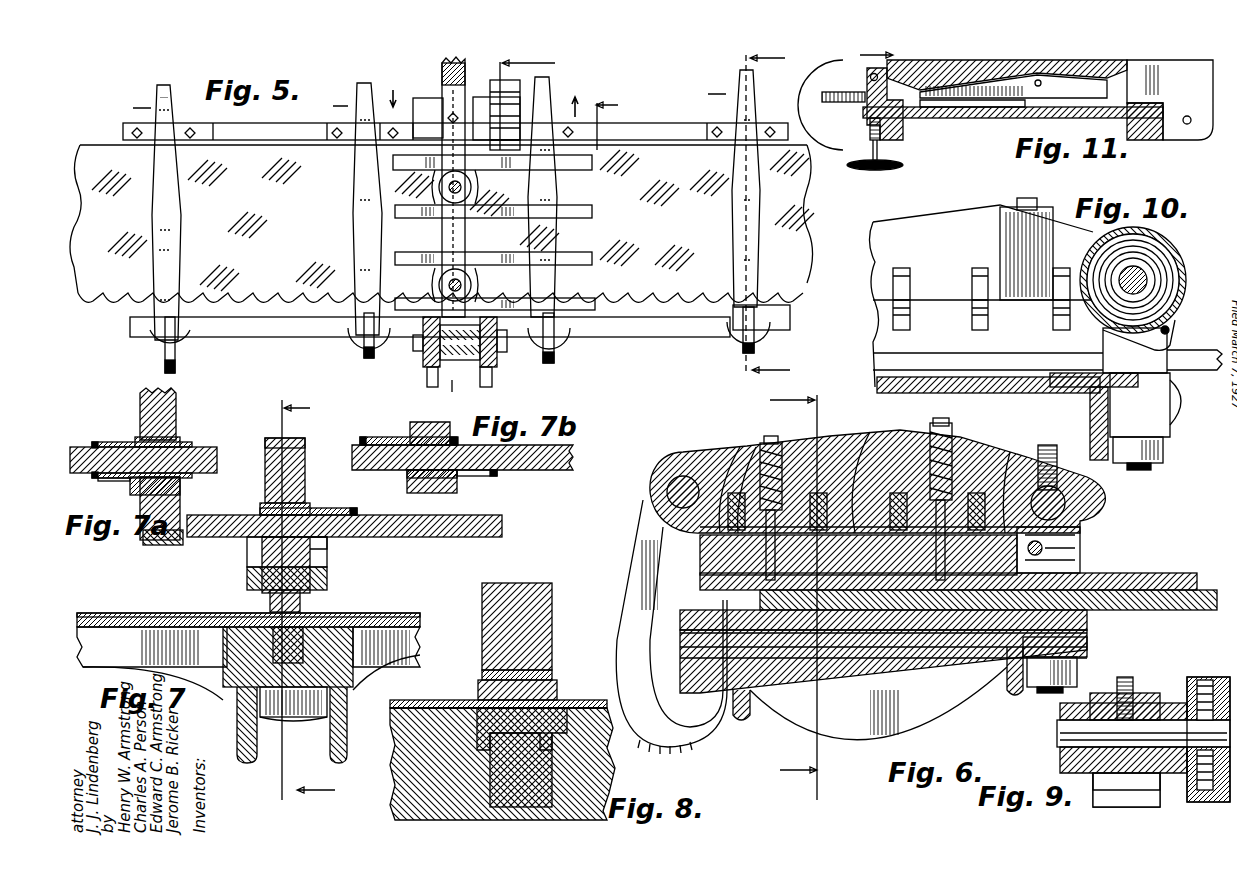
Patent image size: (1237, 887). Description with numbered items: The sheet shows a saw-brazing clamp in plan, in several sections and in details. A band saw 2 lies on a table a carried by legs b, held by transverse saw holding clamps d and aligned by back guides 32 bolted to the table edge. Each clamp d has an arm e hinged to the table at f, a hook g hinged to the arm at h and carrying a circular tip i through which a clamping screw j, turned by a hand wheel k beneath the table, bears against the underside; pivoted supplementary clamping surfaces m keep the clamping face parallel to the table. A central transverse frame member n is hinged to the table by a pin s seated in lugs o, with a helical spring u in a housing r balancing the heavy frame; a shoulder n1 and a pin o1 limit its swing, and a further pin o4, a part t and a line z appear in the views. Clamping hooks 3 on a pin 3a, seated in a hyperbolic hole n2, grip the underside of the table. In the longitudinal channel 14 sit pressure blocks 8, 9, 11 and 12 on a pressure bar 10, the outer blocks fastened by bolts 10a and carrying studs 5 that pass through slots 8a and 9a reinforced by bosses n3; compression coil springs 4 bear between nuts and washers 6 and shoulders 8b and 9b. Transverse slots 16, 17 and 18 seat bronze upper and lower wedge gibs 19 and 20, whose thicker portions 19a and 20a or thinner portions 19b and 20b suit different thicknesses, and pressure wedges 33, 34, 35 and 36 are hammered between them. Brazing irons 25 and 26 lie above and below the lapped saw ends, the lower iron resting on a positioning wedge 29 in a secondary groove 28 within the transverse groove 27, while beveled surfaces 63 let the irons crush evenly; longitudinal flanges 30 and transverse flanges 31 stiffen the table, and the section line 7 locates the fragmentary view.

In FIG. 5, the band saw 2 is at (442, 223).
In FIG. 7, the band saw 2 is at (410, 683).
In FIG. 6, the band saw 2 is at (925, 432).
In FIG. 5, the clamping hooks 3 is at (427, 385).
In FIG. 6, the clamping hooks 3 is at (700, 560).
In FIG. 5, the pin 3a is at (446, 348).
In FIG. 6, the pin 3a is at (678, 475).
In FIG. 6, the compression coil springs 4 is at (793, 470).
In FIG. 6, the studs 5 is at (762, 460).
In FIG. 5, the nuts and washers 6 is at (438, 187).
In FIG. 7, the nuts and washers 6 is at (317, 600).
In FIG. 6, the nuts and washers 6 is at (772, 440).
In FIG. 6, the section line 7 is at (787, 596).
In FIG. 6, the pressure block 8 is at (712, 575).
In FIG. 6, the slot 8a is at (756, 446).
In FIG. 6, the shoulder 8b is at (740, 446).
In FIG. 5, the pressure block 9 is at (165, 370).
In FIG. 6, the pressure block 9 is at (1045, 550).
In FIG. 6, the slot 9a is at (932, 440).
In FIG. 6, the shoulder 9b is at (912, 450).
In FIG. 5, the pressure bar 10 is at (571, 103).
In FIG. 7A, the pressure bar 10 is at (245, 580).
In FIG. 7, the pressure bar 10 is at (250, 580).
In FIG. 8, the pressure bar 10 is at (490, 660).
In FIG. 6, the pressure bar 10 is at (700, 615).
In FIG. 6, the bolts 10a is at (760, 596).
In FIG. 5, the pressure block 11 is at (781, 216).
In FIG. 7A, the pressure block 11 is at (150, 495).
In FIG. 7B, the pressure block 11 is at (455, 488).
In FIG. 7, the pressure block 11 is at (310, 555).
In FIG. 8, the pressure block 11 is at (490, 602).
In FIG. 6, the pressure block 11 is at (812, 665).
In FIG. 6, the pressure block 12 is at (865, 665).
In FIG. 6, the longitudinal channel 14 is at (700, 540).
In FIG. 10, the slot 16 is at (898, 325).
In FIG. 10, the slot 17 is at (978, 325).
In FIG. 10, the slot 18 is at (1062, 325).
In FIG. 10, the upper wedge gib 19 is at (910, 308).
In FIG. 7A, the upper wedge gib 19 is at (190, 478).
In FIG. 7B, the upper wedge gib 19 is at (410, 480).
In FIG. 6, the upper wedge gib 19 is at (700, 527).
In FIG. 7A, the thick portion of upper gib 19a is at (150, 530).
In FIG. 7B, the thick portion of upper gib 19a is at (425, 490).
In FIG. 7, the thick portion of upper gib 19a is at (262, 556).
In FIG. 7A, the thin portion of upper gib 19b is at (110, 480).
In FIG. 7B, the thin portion of upper gib 19b is at (495, 478).
In FIG. 7, the thin portion of upper gib 19b is at (330, 552).
In FIG. 10, the lower wedge gib 20 is at (902, 268).
In FIG. 7A, the lower wedge gib 20 is at (185, 440).
In FIG. 7B, the lower wedge gib 20 is at (362, 437).
In FIG. 7, the lower wedge gib 20 is at (312, 508).
In FIG. 6, the lower wedge gib 20 is at (735, 493).
In FIG. 7A, the thick portion of lower gib 20a is at (183, 430).
In FIG. 7B, the thick portion of lower gib 20a is at (392, 435).
In FIG. 7, the thick portion of lower gib 20a is at (262, 506).
In FIG. 7A, the thin portion of lower gib 20b is at (102, 445).
In FIG. 7B, the thin portion of lower gib 20b is at (455, 437).
In FIG. 7, the thin portion of lower gib 20b is at (352, 508).
In FIG. 7A, the upper brazing iron 25 is at (175, 545).
In FIG. 7, the upper brazing iron 25 is at (328, 570).
In FIG. 8, the upper brazing iron 25 is at (552, 675).
In FIG. 6, the upper brazing iron 25 is at (1180, 573).
In FIG. 7, the lower brazing iron 26 is at (272, 640).
In FIG. 8, the lower brazing iron 26 is at (560, 700).
In FIG. 6, the lower brazing iron 26 is at (1210, 590).
In FIG. 7, the transverse groove 27 is at (355, 660).
In FIG. 7, the secondary groove 28 is at (345, 685).
In FIG. 7, the positioning wedge 29 is at (290, 718).
In FIG. 8, the positioning wedge 29 is at (540, 773).
In FIG. 6, the positioning wedge 29 is at (700, 640).
In FIG. 6, the longitudinal flanges 30 is at (740, 723).
In FIG. 7, the transverse flanges 31 is at (242, 762).
In FIG. 6, the transverse flanges 31 is at (945, 708).
In FIG. 5, the back guides 32 is at (125, 128).
In FIG. 5, the pressure wedge 33 is at (586, 318).
In FIG. 6, the pressure wedge 33 is at (722, 470).
In FIG. 5, the pressure wedge 34 is at (592, 258).
In FIG. 10, the pressure wedge 34 is at (897, 290).
In FIG. 7A, the pressure wedge 34 is at (200, 447).
In FIG. 7B, the pressure wedge 34 is at (555, 470).
In FIG. 7, the pressure wedge 34 is at (478, 537).
In FIG. 6, the pressure wedge 34 is at (825, 480).
In FIG. 5, the pressure wedge 35 is at (592, 212).
In FIG. 10, the pressure wedge 35 is at (975, 285).
In FIG. 6, the pressure wedge 35 is at (860, 450).
In FIG. 5, the pressure wedge 36 is at (592, 162).
In FIG. 10, the pressure wedge 36 is at (1060, 292).
In FIG. 6, the pressure wedge 36 is at (1003, 475).
In FIG. 7, the beveled surface 63 is at (215, 618).
In FIG. 8, the beveled surface 63 is at (445, 700).
In FIG. 6, the beveled surface 63 is at (621, 743).
In FIG. 5, the table a is at (290, 135).
In FIG. 11, the table a is at (1002, 120).
In FIG. 7, the table a is at (130, 632).
In FIG. 8, the table a is at (502, 764).
In FIG. 10, the legs b is at (1027, 198).
In FIG. 5, the saw holding clamps d is at (163, 240).
In FIG. 11, the arms e is at (966, 72).
In FIG. 5, the hinge f is at (424, 98).
In FIG. 11, the hinge f is at (1190, 126).
In FIG. 11, the hooks g is at (858, 140).
In FIG. 11, the hinge h is at (865, 85).
In FIG. 11, the circular tip i is at (890, 152).
In FIG. 11, the clamping screws j is at (905, 130).
In FIG. 11, the hand wheels k is at (875, 172).
In FIG. 11, the supplementary clamping surfaces m is at (1062, 86).
In FIG. 5, the frame member n is at (455, 187).
In FIG. 10, the frame member n is at (970, 215).
In FIG. 7A, the frame member n is at (140, 405).
In FIG. 7B, the frame member n is at (415, 425).
In FIG. 7, the frame member n is at (265, 478).
In FIG. 6, the frame member n is at (893, 440).
In FIG. 9, the frame member n is at (1150, 693).
In FIG. 6, the shoulder n1 is at (1098, 494).
In FIG. 5, the hole n2 is at (462, 392).
In FIG. 10, the bosses n3 is at (1048, 245).
In FIG. 5, the lugs o is at (423, 98).
In FIG. 10, the lugs o is at (1157, 347).
In FIG. 6, the lugs o is at (1080, 545).
In FIG. 9, the lugs o is at (1160, 793).
In FIG. 6, the pin o1 is at (1080, 540).
In FIG. 6, the block o4 is at (1080, 562).
In FIG. 10, the housing r is at (1180, 270).
In FIG. 9, the housing r is at (1195, 677).
In FIG. 6, the pin s is at (1090, 512).
In FIG. 9, the pin s is at (1058, 736).
In FIG. 11, the bolt t is at (835, 111).
In FIG. 6, the bolt t is at (1040, 450).
In FIG. 9, the bolt t is at (1127, 677).
In FIG. 10, the helical spring u is at (1150, 255).
In FIG. 9, the helical spring u is at (1210, 680).
In FIG. 7, the base line z is at (395, 612).
In FIG. 8, the base line z is at (418, 706).